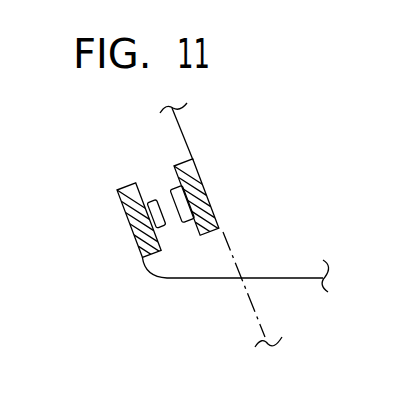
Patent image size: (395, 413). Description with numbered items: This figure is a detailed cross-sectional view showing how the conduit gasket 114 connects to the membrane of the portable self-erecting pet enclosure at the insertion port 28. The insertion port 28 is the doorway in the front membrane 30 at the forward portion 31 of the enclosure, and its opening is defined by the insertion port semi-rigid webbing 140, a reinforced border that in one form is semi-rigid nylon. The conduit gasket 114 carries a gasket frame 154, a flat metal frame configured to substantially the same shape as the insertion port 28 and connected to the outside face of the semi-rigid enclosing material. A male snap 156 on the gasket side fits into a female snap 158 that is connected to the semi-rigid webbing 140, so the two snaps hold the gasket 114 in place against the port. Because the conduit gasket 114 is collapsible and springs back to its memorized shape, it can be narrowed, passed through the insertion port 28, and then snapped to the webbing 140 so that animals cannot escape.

The conduit gasket 114 is at (120, 232).
The front membrane 30 is at (182, 133).
The forward portion 31 is at (176, 131).
The insertion port 28 is at (235, 260).
The insertion port semi-rigid webbing 140 is at (212, 188).
The gasket frame 154 is at (120, 203).
The male snap 156 is at (150, 201).
The female snap 158 is at (171, 188).